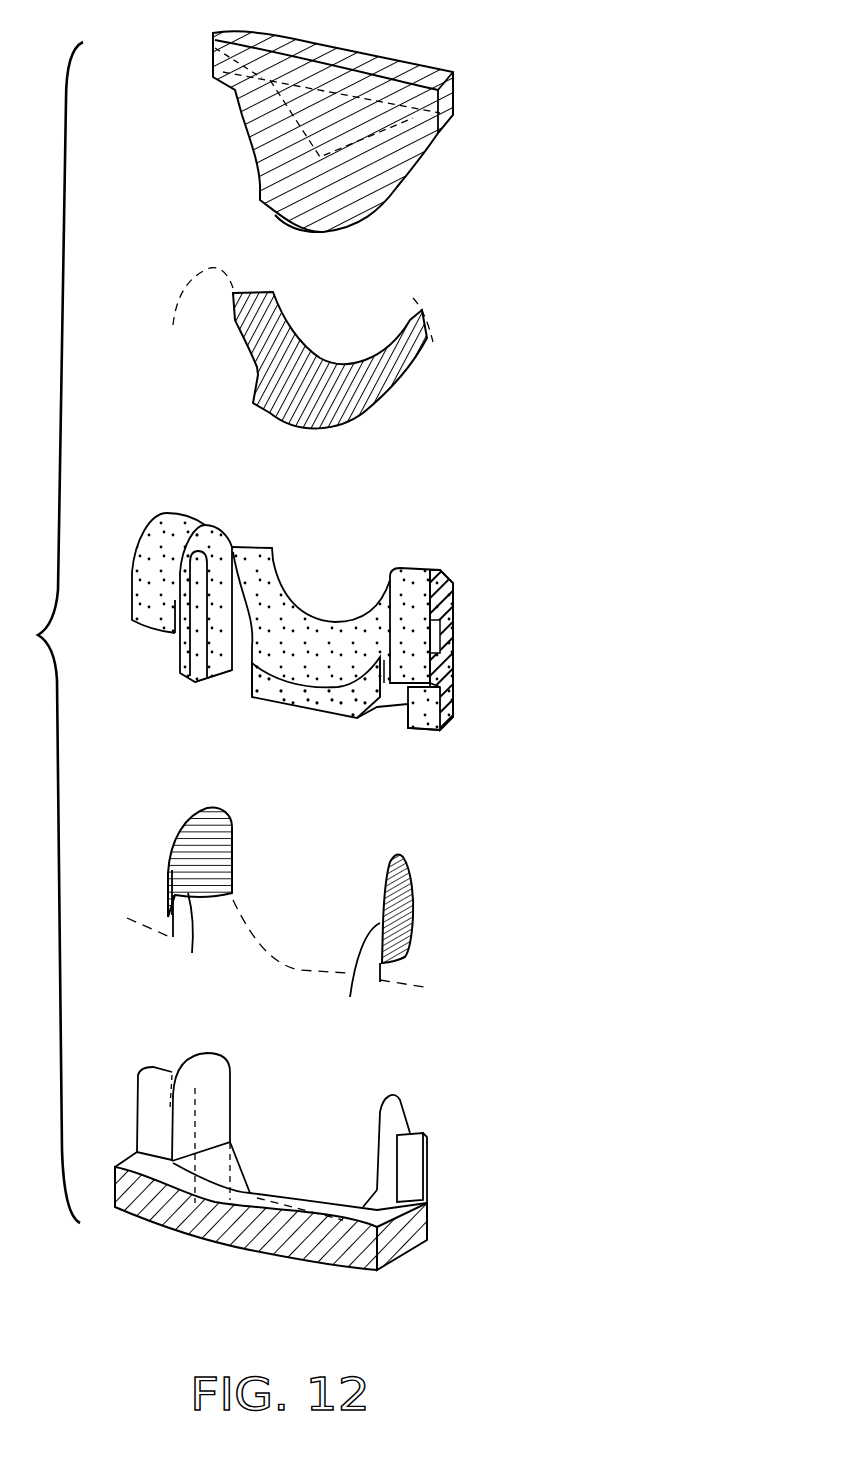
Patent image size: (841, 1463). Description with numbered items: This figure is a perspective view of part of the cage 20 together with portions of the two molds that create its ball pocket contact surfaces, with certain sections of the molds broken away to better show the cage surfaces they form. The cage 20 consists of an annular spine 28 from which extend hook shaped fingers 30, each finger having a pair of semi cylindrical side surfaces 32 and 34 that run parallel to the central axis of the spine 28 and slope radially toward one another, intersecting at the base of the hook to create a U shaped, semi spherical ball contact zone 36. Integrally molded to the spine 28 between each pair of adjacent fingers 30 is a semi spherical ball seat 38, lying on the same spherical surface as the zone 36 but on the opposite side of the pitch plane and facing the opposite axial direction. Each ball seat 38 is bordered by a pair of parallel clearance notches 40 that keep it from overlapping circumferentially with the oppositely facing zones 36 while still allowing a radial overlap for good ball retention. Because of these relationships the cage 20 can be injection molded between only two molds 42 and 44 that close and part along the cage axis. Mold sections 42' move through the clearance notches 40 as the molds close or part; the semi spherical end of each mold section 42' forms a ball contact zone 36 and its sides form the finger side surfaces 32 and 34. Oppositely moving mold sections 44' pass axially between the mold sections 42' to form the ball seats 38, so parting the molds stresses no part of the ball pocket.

The cage 20 is at (466, 652).
The annular spine 28 is at (307, 703).
The hook shaped fingers 30 is at (192, 510).
The finger side surface 32 is at (175, 607).
The finger side surface 34 is at (225, 598).
The ball contact zone 36 is at (237, 533).
The ball seat 38 is at (330, 385).
The clearance notch 40 is at (242, 667).
The mold 42 is at (271, 1234).
The mold section 42' is at (301, 1106).
The mold 44 is at (343, 116).
The mold section 44' is at (363, 237).